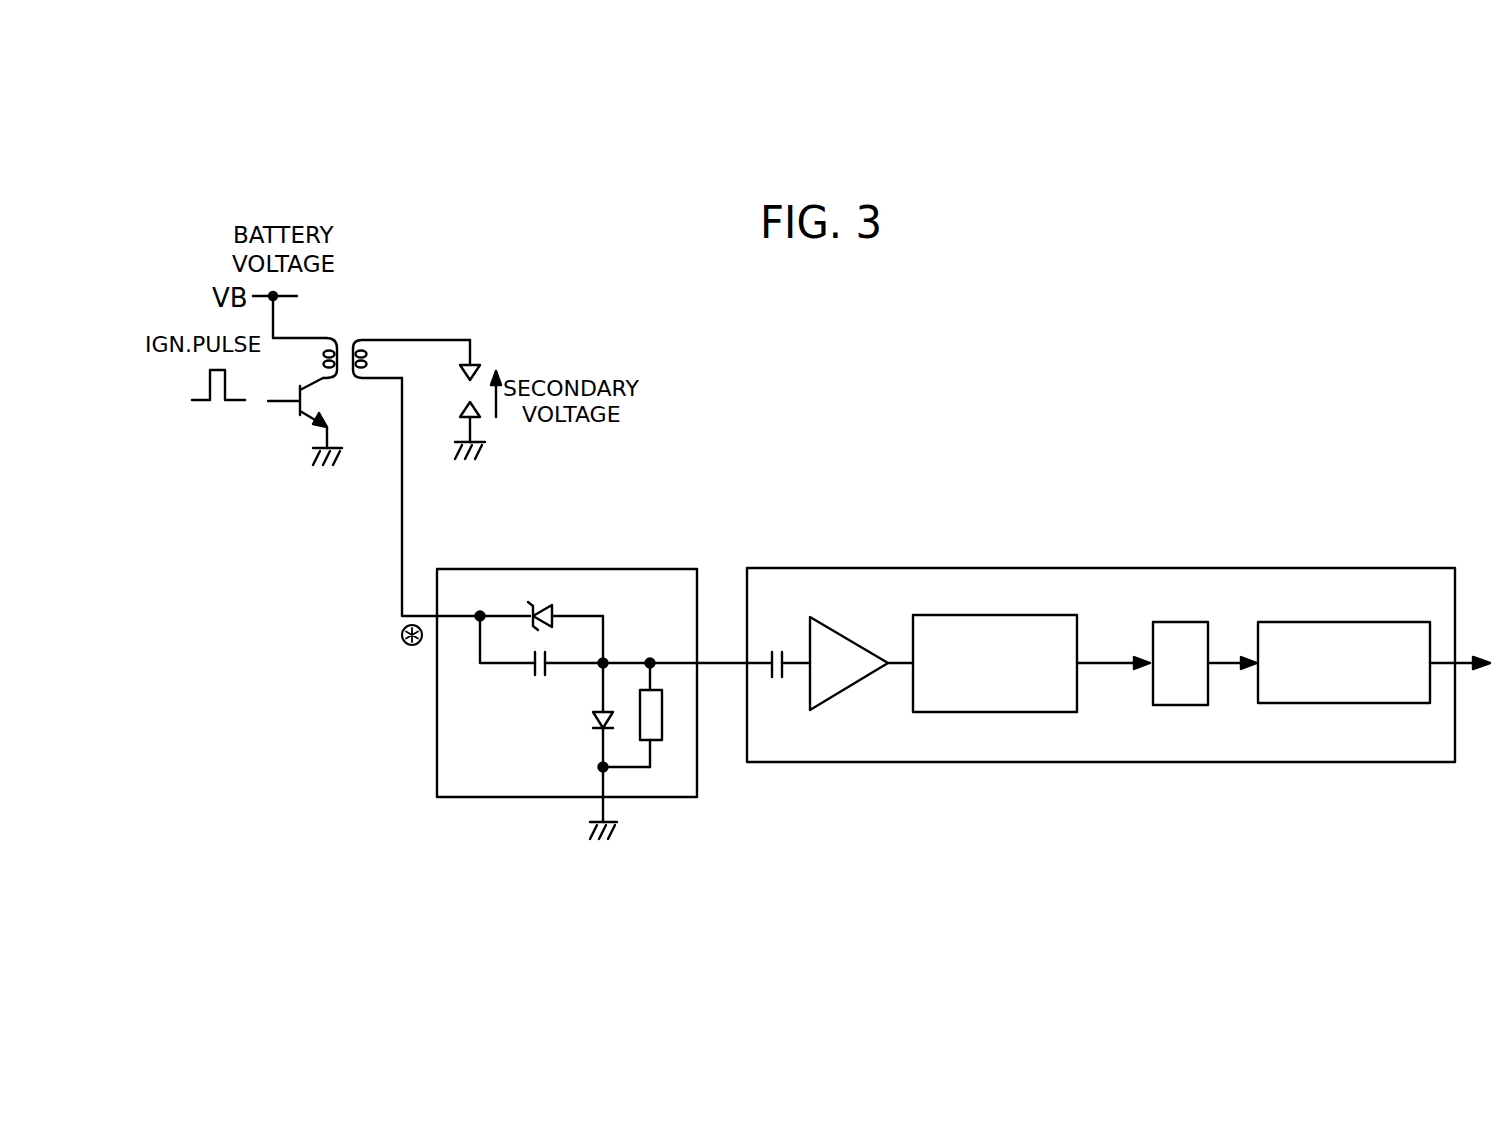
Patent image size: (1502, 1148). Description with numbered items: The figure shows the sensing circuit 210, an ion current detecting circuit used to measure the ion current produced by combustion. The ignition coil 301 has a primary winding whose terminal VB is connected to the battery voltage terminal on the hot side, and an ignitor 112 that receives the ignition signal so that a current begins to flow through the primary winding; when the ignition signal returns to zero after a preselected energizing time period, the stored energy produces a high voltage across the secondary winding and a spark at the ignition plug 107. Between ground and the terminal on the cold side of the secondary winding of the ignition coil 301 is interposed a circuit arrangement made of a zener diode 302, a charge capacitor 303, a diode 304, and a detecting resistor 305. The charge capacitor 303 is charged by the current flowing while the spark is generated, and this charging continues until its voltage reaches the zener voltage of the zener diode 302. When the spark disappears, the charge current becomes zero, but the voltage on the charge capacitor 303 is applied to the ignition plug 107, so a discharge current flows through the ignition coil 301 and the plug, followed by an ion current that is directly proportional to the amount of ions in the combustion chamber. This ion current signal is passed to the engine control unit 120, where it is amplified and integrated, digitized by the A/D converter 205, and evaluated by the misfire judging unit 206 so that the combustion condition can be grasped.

The ignition coil 301 is at (345, 340).
The ignition plug 107 is at (488, 370).
The ignitor 112 is at (300, 413).
The sensing circuit 210 is at (570, 662).
The zener diode 302 is at (553, 605).
The charge capacitor 303 is at (530, 673).
The diode 304 is at (593, 715).
The detecting resistor 305 is at (662, 727).
The engine control unit 120 is at (1118, 616).
The A/D converter 205 is at (1180, 622).
The misfire judging unit 206 is at (1343, 622).